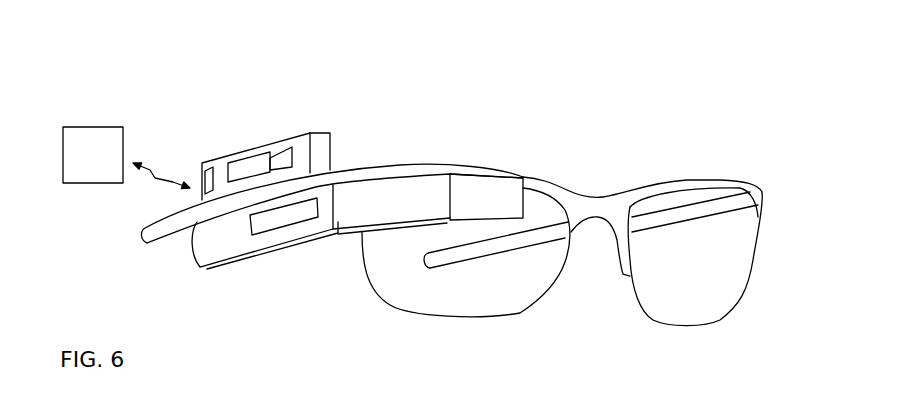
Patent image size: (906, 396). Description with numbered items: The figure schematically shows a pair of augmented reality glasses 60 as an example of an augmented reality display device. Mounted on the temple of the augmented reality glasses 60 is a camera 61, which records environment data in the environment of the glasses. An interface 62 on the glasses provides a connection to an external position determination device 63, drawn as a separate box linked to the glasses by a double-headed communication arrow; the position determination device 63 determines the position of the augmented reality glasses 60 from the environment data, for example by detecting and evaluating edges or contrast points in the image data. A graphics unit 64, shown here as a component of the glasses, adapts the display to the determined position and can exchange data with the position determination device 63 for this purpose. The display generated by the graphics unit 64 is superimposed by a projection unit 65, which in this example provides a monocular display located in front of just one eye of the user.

The augmented reality glasses 60 is at (574, 133).
The camera 61 is at (288, 139).
The interface 62 is at (202, 180).
The position determination device 63 is at (93, 127).
The graphics unit 64 is at (276, 231).
The projection unit 65 is at (485, 178).